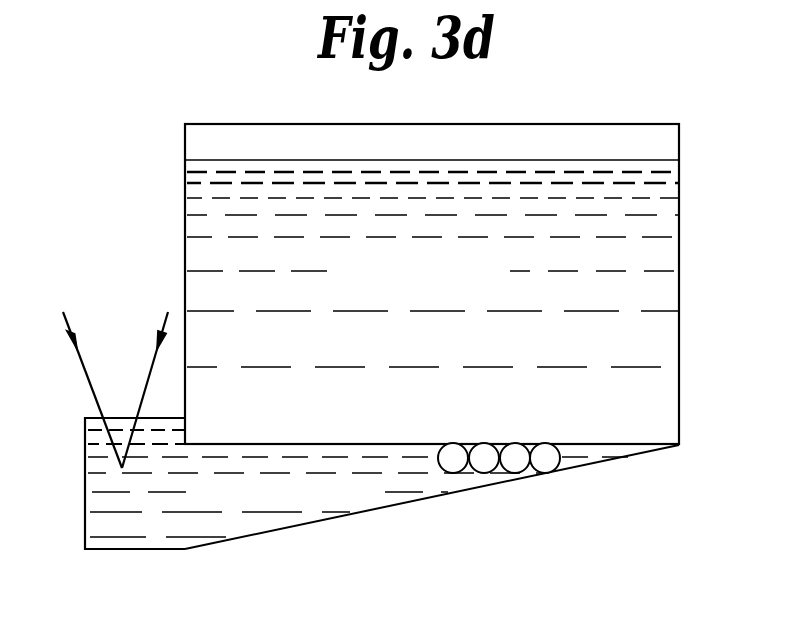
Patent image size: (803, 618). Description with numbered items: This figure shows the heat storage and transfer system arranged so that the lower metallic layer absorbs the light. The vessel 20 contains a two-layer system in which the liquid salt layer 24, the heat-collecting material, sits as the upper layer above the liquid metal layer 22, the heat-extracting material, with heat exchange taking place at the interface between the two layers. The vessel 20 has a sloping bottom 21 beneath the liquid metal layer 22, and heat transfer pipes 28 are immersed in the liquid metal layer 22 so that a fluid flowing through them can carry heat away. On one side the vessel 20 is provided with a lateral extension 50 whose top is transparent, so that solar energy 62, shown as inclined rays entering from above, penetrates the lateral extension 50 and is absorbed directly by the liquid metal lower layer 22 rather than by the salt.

The vessel 20 is at (163, 550).
The sloping bottom 21 is at (358, 513).
The liquid metal layer 22 is at (100, 523).
The liquid salt layer 24 is at (665, 286).
The heat transfer pipes 28 is at (483, 463).
The lateral extension 50 is at (98, 482).
The solar energy 62 is at (87, 375).